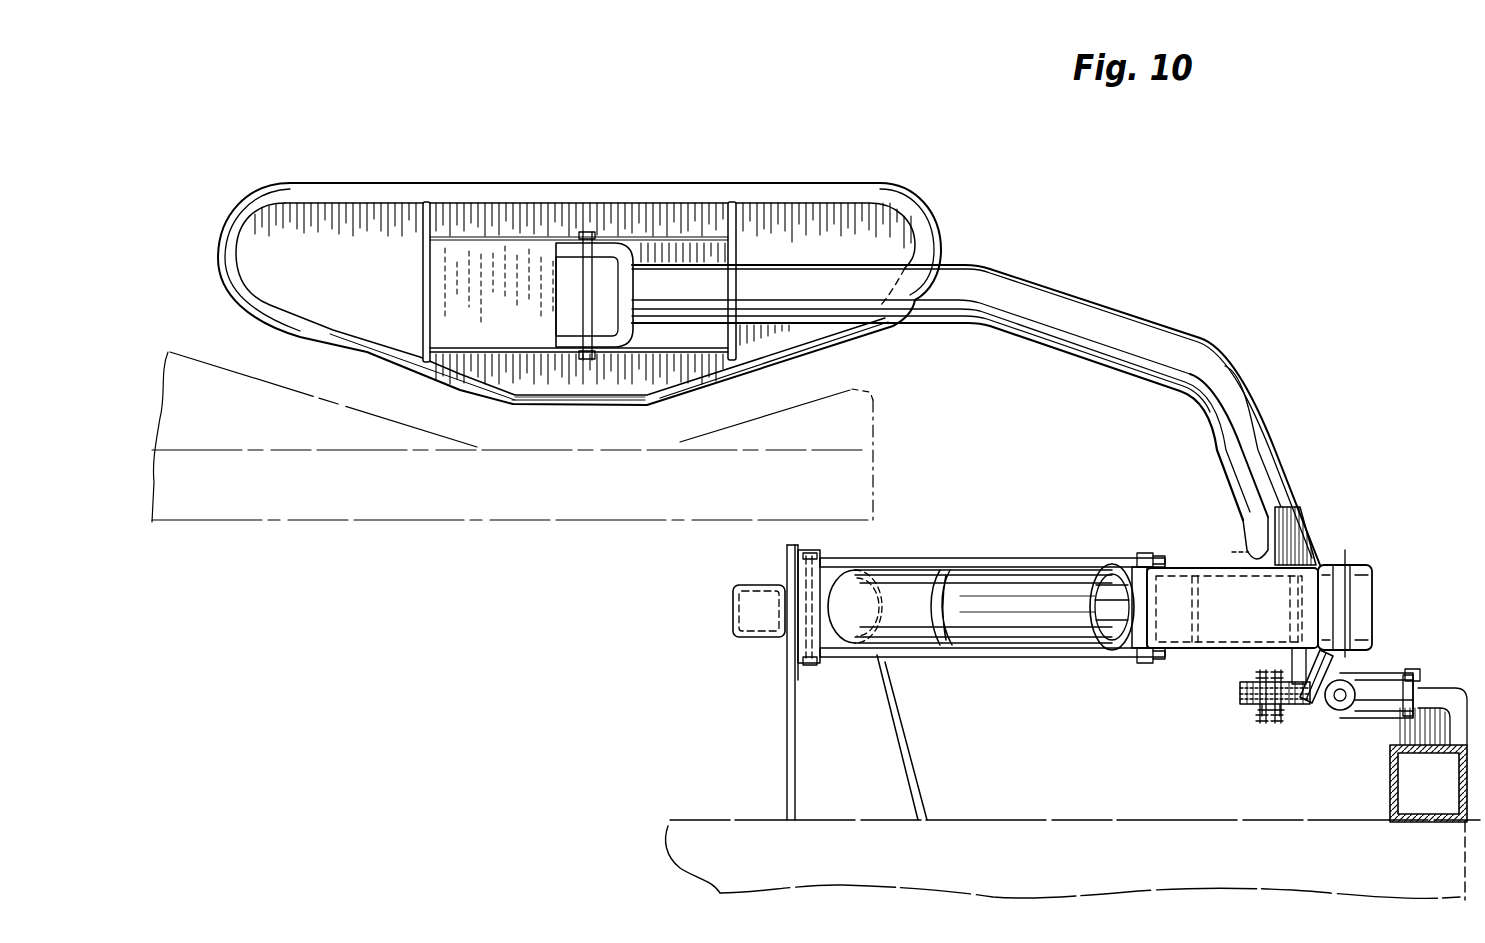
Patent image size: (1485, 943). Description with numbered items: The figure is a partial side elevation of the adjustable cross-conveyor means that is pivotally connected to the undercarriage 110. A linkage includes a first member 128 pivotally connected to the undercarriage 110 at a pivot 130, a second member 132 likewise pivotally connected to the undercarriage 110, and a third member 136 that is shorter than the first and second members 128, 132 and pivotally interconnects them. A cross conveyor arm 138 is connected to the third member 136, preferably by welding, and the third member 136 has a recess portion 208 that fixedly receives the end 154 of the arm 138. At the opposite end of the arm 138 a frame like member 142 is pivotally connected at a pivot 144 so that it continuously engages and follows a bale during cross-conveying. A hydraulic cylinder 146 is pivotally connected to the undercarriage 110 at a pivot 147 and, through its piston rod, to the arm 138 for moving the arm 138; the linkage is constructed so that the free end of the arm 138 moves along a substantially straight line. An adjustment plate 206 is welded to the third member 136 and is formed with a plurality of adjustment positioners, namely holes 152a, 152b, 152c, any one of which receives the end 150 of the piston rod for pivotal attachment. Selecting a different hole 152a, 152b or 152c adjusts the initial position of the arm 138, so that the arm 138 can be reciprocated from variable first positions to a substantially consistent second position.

The undercarriage 110 is at (733, 610).
The first member 128 is at (912, 578).
The pivot connection of first member 130 is at (810, 552).
The second member 132 is at (996, 580).
The third member 136 is at (1210, 578).
The cross conveyor arm 138 is at (1127, 310).
The frame like member 142 is at (622, 183).
The pivotal connection of frame like member 144 is at (578, 300).
The hydraulic cylinder 146 is at (1373, 720).
The pivotal connection of hydraulic cylinder 147 is at (1418, 674).
The end of piston rod 150 is at (1245, 665).
The hole 152a is at (1278, 724).
The hole 152b is at (1250, 706).
The hole 152c is at (1262, 712).
The end of arm 154 is at (1240, 567).
The adjustment plate 206 is at (1343, 670).
The recess portion 208 is at (1237, 517).